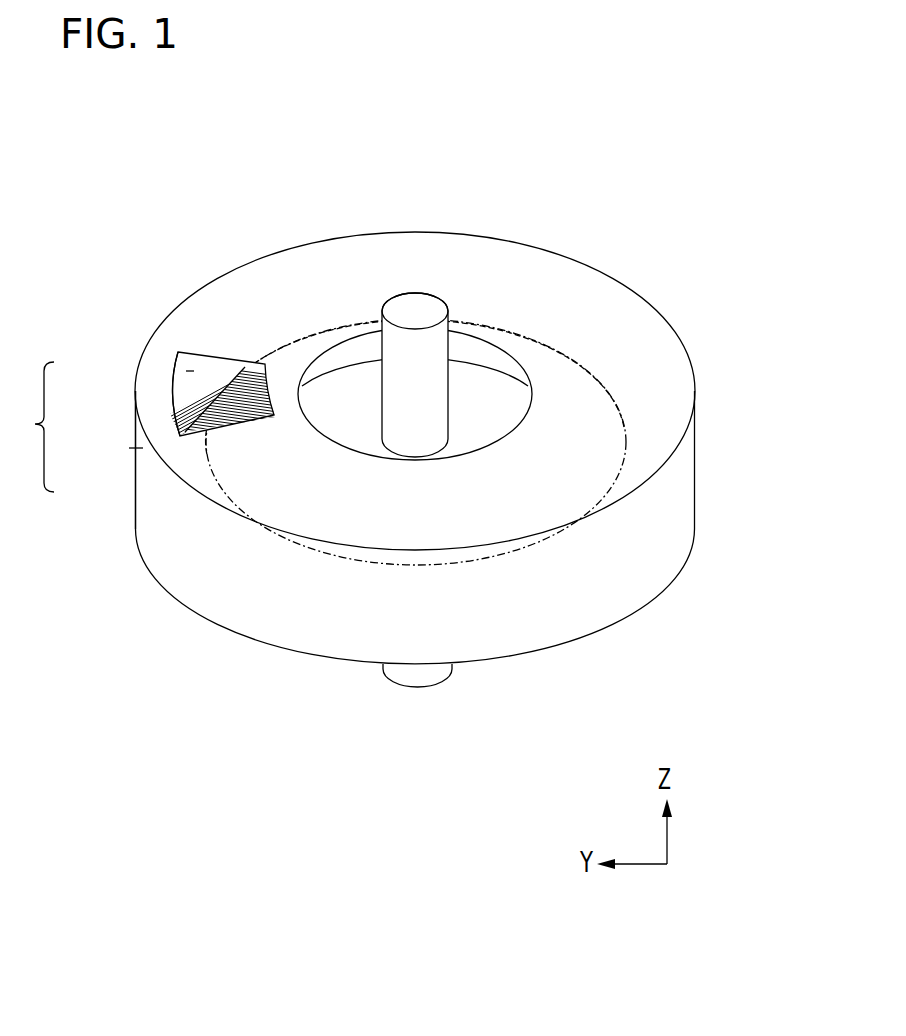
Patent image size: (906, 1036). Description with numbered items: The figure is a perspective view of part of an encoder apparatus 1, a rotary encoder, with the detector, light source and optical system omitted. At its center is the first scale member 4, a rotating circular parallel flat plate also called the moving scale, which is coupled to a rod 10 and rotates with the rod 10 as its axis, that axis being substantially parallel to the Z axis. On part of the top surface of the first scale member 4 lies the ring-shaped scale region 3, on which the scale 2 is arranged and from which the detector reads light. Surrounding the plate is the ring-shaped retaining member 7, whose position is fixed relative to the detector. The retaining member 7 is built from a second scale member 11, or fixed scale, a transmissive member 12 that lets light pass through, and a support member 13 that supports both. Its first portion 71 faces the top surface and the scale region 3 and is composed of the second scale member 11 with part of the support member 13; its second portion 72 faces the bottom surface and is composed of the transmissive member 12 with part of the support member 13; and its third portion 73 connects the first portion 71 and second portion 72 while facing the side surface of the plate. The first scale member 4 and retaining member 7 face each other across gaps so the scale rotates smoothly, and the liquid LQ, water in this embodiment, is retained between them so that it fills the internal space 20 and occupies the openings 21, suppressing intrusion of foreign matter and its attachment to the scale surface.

The encoder apparatus 1 is at (459, 401).
The scale 2 is at (266, 365).
The scale region 3 is at (240, 370).
The first scale member 4 is at (484, 386).
The retaining member 7 is at (98, 460).
The rod 10 is at (449, 345).
The second scale member 11 is at (182, 403).
The transmissive member 12 is at (150, 560).
The support member 13 is at (133, 449).
The internal space 20 is at (225, 378).
The openings 21 is at (320, 401).
The first portion 71 is at (670, 343).
The second portion 72 is at (673, 566).
The third portion 73 is at (686, 458).
The liquid LQ is at (190, 372).